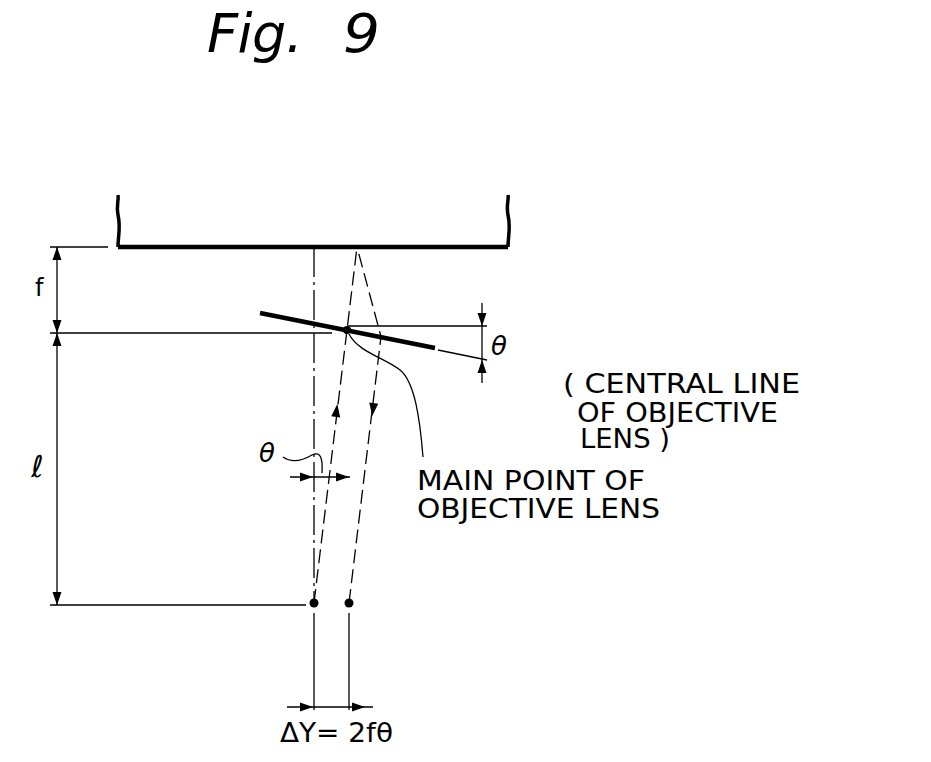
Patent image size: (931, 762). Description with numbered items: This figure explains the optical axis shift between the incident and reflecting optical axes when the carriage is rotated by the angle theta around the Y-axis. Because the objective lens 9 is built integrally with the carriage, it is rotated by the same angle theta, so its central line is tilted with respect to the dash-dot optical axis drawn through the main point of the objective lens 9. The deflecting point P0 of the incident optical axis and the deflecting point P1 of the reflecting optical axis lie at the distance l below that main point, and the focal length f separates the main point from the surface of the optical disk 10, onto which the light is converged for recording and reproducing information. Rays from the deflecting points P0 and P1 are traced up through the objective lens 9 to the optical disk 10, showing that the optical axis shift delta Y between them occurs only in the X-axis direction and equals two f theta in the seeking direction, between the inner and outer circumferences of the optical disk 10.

The objective lens 9 is at (432, 352).
The optical disk 10 is at (433, 247).
The deflecting point of the incident optical axis P0 is at (312, 608).
The deflecting point of the reflecting optical axis P1 is at (351, 606).